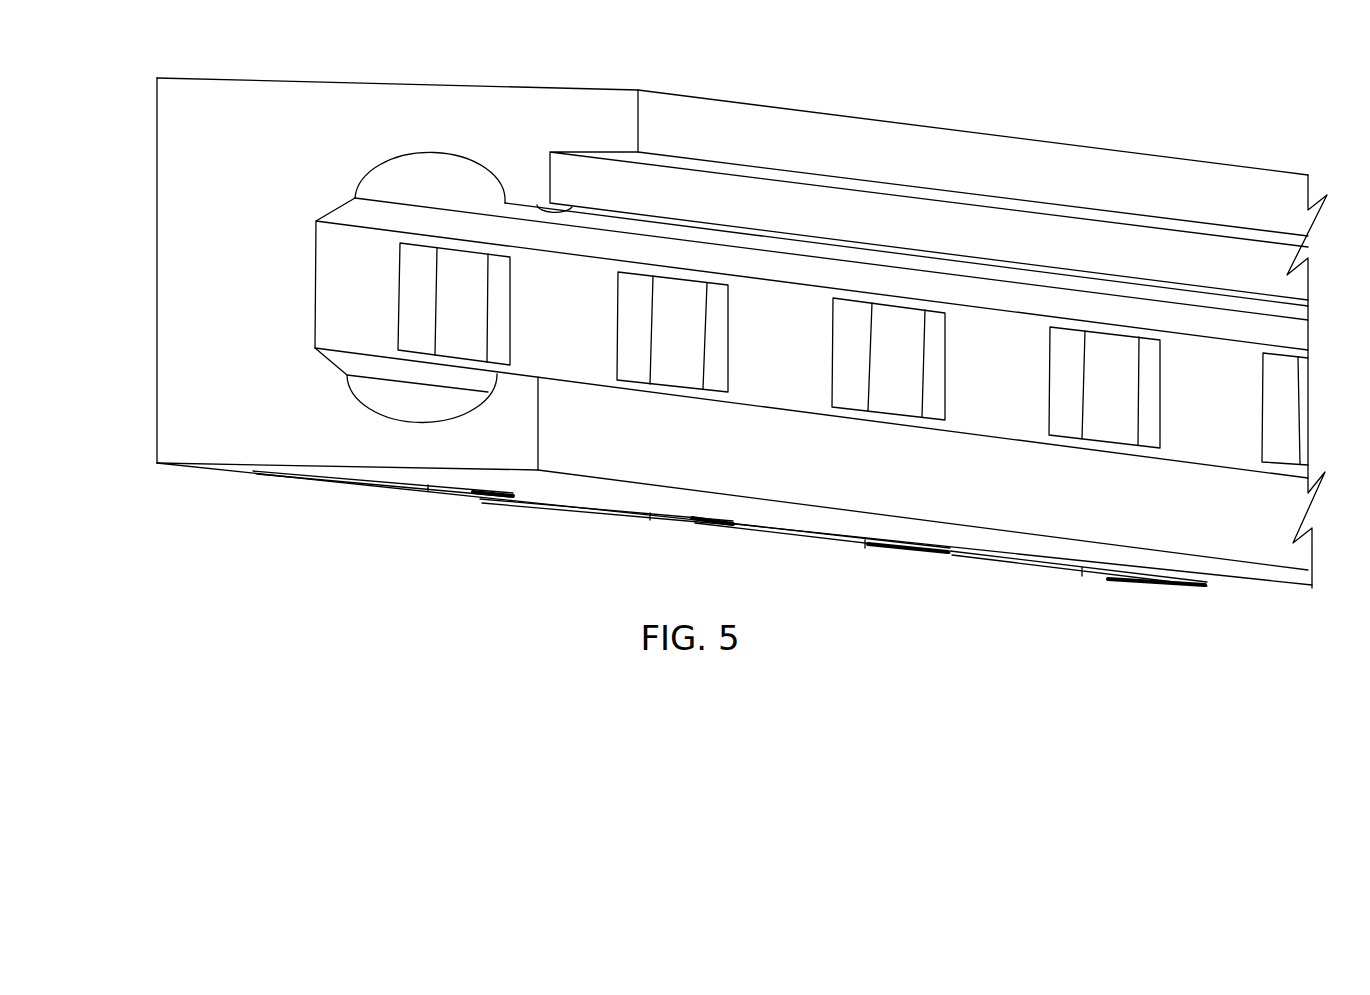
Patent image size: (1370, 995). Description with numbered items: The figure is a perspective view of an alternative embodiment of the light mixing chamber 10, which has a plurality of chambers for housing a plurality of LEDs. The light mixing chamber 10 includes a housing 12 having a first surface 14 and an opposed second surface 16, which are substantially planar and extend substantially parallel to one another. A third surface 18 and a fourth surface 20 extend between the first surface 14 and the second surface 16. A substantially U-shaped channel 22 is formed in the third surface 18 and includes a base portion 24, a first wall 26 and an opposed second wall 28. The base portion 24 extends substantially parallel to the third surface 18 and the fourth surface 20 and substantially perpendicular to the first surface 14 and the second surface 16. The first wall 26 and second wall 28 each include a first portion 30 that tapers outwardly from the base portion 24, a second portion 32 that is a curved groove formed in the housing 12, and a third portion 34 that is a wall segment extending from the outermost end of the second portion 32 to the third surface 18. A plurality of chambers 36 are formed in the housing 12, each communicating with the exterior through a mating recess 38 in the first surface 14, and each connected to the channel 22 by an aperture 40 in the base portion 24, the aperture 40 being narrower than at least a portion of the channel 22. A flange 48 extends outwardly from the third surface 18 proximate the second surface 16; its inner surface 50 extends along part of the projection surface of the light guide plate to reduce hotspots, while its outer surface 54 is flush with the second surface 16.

The light mixing chamber 10 is at (1064, 105).
The housing 12 is at (219, 134).
The first surface 14 is at (215, 472).
The second surface 16 is at (389, 80).
The third surface 18 is at (598, 442).
The fourth surface 20 is at (156, 378).
The channel 22 is at (383, 397).
The base portion 24 is at (317, 331).
The first wall 26 is at (505, 203).
The second wall 28 is at (391, 419).
The first portion 30 is at (329, 214).
The second portion 32 is at (423, 155).
The third portion 34 is at (564, 209).
The chamber 36 is at (409, 320).
The recess 38 is at (380, 483).
The aperture 40 is at (472, 352).
The flange 48 is at (616, 133).
The inner surface 50 is at (744, 177).
The outer surface 54 is at (605, 88).